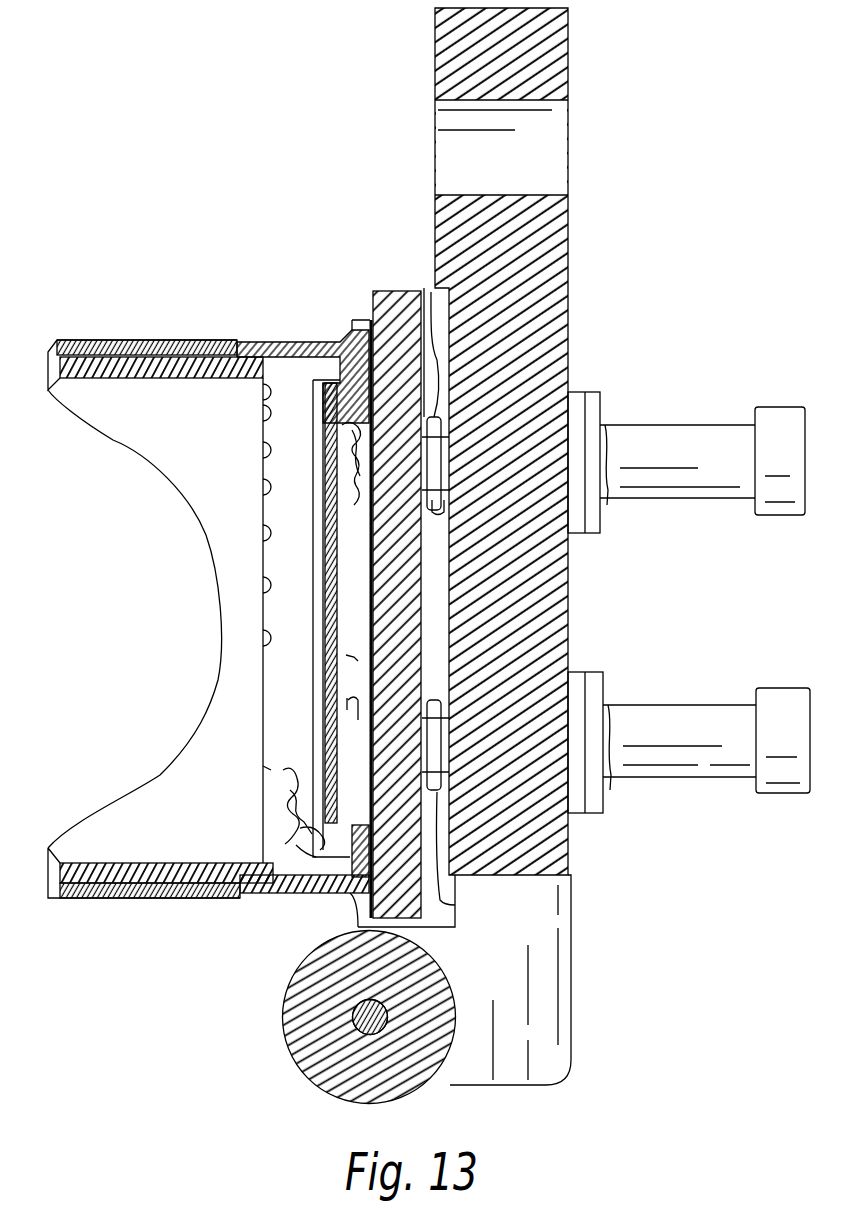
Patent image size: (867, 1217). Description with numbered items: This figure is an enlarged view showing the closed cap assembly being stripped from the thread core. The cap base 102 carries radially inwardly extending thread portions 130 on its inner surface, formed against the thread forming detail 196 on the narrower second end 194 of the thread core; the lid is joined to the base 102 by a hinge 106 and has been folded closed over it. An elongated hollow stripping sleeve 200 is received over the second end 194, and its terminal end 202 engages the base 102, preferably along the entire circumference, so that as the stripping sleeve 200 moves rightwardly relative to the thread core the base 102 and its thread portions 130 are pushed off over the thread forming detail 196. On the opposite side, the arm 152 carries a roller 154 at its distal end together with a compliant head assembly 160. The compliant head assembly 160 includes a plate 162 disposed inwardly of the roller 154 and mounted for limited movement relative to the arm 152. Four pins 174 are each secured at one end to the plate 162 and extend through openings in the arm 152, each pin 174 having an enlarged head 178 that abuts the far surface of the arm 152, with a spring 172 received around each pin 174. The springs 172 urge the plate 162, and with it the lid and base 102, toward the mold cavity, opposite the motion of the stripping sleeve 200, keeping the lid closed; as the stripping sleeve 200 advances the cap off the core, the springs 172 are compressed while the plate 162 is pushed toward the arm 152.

The compliant head assembly 160 is at (372, 217).
The plate 162 is at (368, 291).
The springs 172 is at (431, 292).
The arm 152 is at (530, 243).
The hinge 106 is at (348, 322).
The base 102 is at (300, 342).
The thread forming detail 196 is at (175, 378).
The thread portions 130 is at (272, 362).
The second end 194 is at (97, 863).
The stripping sleeve 200 is at (113, 898).
The terminal end 202 is at (252, 895).
The roller 154 is at (320, 1067).
The pin 174 is at (660, 475).
The enlarged head 178 is at (775, 437).